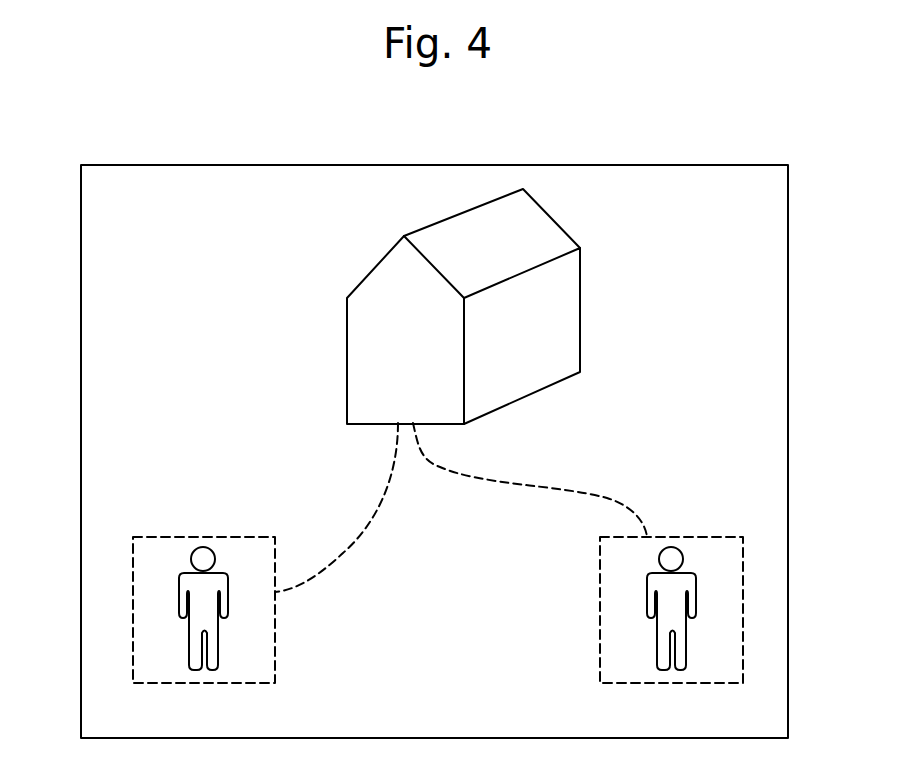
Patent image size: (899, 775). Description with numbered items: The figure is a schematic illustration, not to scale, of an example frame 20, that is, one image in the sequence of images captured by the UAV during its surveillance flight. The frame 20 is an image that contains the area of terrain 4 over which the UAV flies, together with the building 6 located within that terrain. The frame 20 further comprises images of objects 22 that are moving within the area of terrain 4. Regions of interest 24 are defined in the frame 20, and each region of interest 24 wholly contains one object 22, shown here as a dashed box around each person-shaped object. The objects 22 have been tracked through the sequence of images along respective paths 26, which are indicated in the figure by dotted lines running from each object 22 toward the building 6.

The area of terrain 4 is at (122, 203).
The building 6 is at (552, 309).
The frame 20 is at (672, 165).
The objects 22 is at (213, 643).
The regions of interest 24 is at (132, 598).
The paths 26 is at (378, 508).